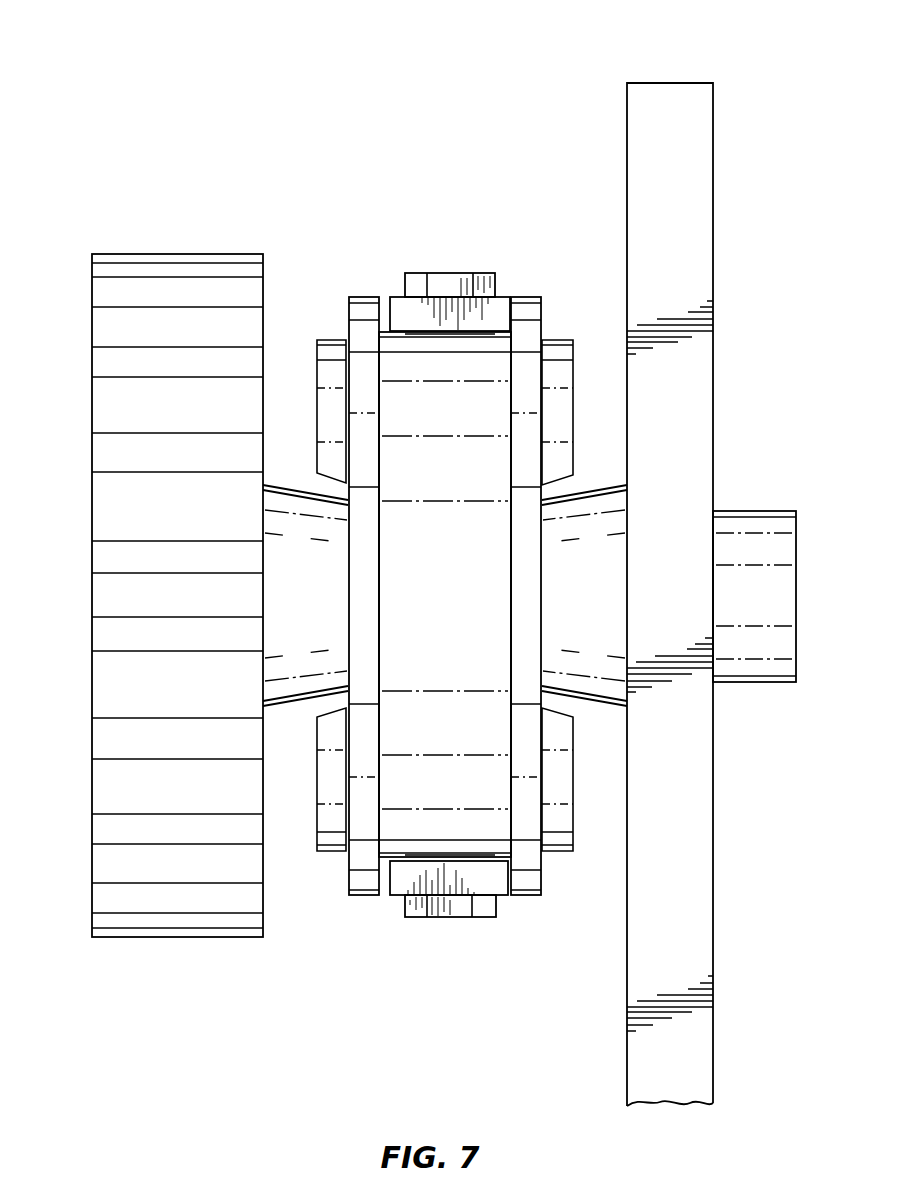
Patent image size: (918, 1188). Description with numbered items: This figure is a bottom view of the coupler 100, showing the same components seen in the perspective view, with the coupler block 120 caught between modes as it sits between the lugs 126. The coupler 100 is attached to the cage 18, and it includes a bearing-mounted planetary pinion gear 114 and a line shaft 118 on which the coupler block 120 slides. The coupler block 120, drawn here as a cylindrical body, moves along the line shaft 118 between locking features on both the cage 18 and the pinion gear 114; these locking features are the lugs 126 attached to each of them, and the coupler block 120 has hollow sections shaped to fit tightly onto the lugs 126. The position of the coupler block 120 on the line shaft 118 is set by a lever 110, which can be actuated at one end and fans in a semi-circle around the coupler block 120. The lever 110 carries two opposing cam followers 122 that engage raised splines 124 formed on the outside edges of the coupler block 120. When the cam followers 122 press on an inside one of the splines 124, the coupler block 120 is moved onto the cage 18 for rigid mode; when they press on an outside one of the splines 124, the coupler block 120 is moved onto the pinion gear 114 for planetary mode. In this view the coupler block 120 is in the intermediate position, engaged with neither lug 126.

The coupler 100 is at (188, 138).
The pinion gear 114 is at (138, 288).
The cage 18 is at (688, 162).
The line shaft 118 is at (755, 511).
The coupler block 120 is at (420, 597).
The cam followers 122 is at (455, 297).
The lever 110 is at (437, 277).
The splines 124 is at (363, 308).
The lugs 126 is at (283, 605).